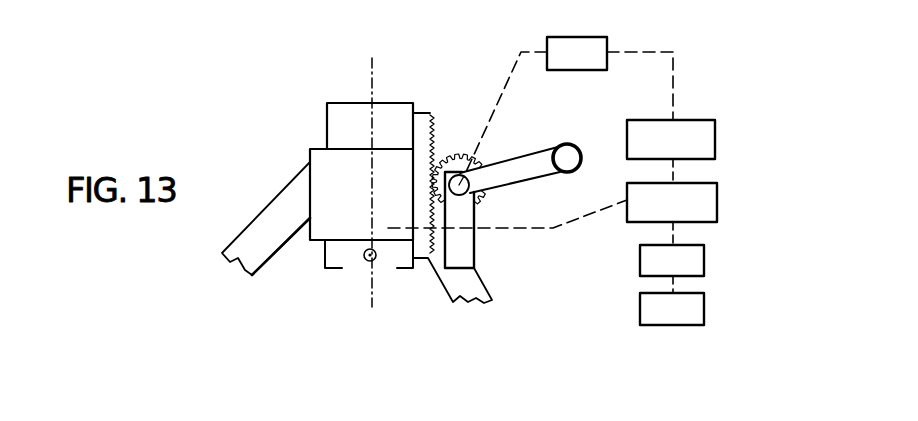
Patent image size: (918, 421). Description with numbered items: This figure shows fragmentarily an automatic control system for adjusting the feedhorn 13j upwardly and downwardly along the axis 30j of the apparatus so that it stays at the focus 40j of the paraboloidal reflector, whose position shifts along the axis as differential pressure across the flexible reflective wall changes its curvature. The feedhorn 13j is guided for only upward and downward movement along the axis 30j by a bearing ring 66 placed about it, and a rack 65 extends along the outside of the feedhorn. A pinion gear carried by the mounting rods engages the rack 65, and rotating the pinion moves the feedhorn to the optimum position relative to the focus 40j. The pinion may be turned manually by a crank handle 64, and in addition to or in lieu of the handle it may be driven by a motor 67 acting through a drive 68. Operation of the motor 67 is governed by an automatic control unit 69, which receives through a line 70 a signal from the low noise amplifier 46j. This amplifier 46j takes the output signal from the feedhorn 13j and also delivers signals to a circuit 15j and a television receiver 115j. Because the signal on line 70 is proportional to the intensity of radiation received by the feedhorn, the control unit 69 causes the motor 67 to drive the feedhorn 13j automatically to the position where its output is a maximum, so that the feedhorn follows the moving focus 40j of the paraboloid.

The axis 30j is at (372, 78).
The feedhorn 13j is at (327, 122).
The bearing ring 66 is at (329, 205).
The focus 40j is at (364, 262).
The rack 65 is at (430, 128).
The crank handle 64 is at (558, 145).
The drive 68 is at (505, 86).
The motor 67 is at (607, 68).
The automatic control unit 69 is at (715, 120).
The low noise amplifier 46j is at (717, 183).
The line 70 is at (672, 170).
The circuit 15j is at (704, 262).
The television receiver 115j is at (704, 312).